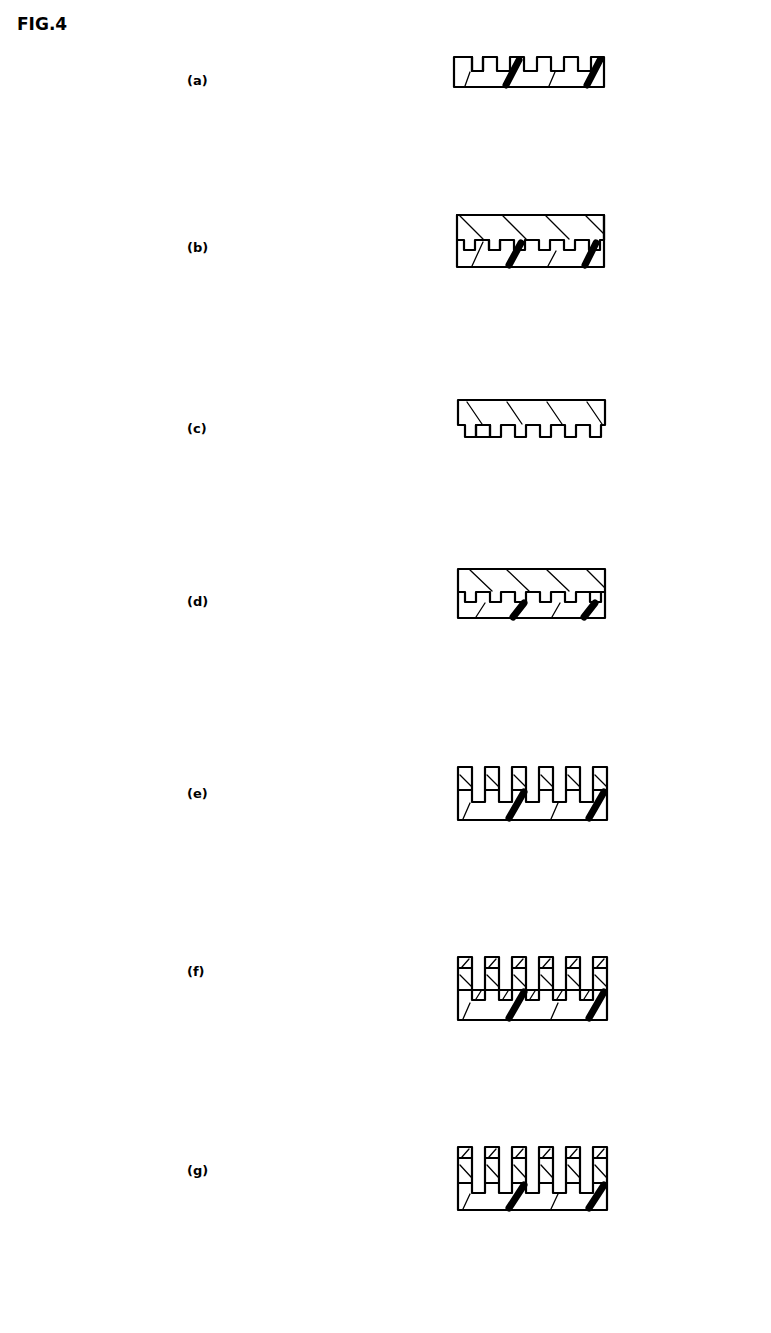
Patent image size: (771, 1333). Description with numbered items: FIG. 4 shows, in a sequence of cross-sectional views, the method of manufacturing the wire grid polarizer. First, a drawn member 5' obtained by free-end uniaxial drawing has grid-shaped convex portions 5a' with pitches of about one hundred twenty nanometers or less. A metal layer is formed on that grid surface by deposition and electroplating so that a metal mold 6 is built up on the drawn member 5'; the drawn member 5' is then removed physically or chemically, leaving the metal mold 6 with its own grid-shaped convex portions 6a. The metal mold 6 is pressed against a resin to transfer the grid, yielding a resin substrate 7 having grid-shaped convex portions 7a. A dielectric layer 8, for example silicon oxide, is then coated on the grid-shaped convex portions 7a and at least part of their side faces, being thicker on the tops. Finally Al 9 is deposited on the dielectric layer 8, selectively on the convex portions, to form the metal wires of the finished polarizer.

The drawn member 5' is at (557, 177).
The grid-shaped convex portions 5a' is at (490, 156).
The metal mold 6 is at (568, 225).
The grid-shaped convex portions 6a is at (512, 437).
The resin substrate 7 is at (502, 611).
The grid-shaped convex portions 7a is at (592, 598).
The dielectric layer 8 is at (607, 772).
The Al 9 is at (557, 988).